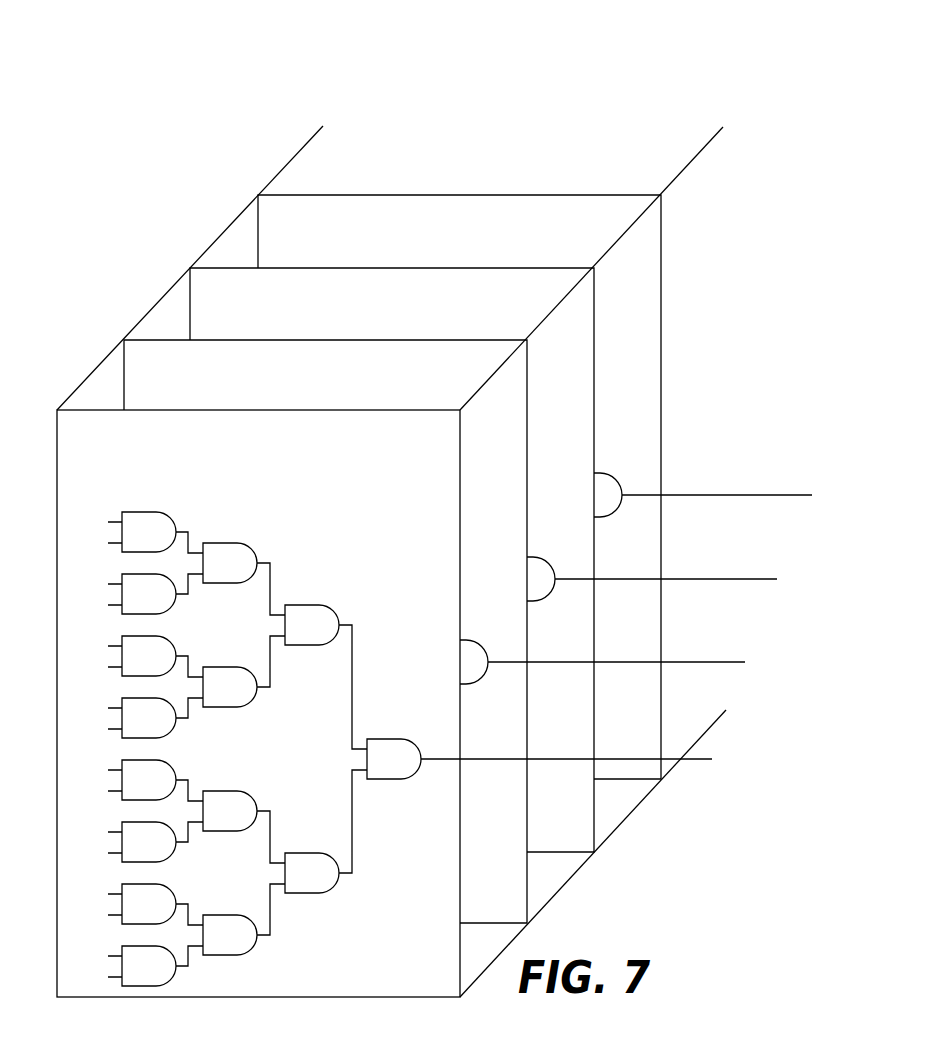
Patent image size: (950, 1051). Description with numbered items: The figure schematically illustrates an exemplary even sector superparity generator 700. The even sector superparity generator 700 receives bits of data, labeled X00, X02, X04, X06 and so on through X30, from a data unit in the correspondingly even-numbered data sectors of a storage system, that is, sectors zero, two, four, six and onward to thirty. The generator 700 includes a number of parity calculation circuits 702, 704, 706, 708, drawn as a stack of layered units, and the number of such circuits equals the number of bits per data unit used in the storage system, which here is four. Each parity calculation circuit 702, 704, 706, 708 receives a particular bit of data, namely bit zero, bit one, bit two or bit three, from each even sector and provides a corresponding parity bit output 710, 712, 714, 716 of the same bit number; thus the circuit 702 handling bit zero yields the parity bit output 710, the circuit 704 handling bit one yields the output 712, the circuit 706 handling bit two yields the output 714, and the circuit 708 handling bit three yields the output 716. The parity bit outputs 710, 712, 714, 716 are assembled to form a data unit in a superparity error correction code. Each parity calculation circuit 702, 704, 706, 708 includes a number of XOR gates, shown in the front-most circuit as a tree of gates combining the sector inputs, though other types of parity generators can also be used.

The even sector superparity generator 700 is at (132, 127).
The parity calculation circuit 702 is at (447, 447).
The parity calculation circuit 704 is at (497, 374).
The parity calculation circuit 706 is at (558, 302).
The parity calculation circuit 708 is at (628, 222).
The parity bit output 710 is at (628, 760).
The parity bit output 712 is at (712, 662).
The parity bit output 714 is at (752, 580).
The parity bit output 716 is at (800, 497).